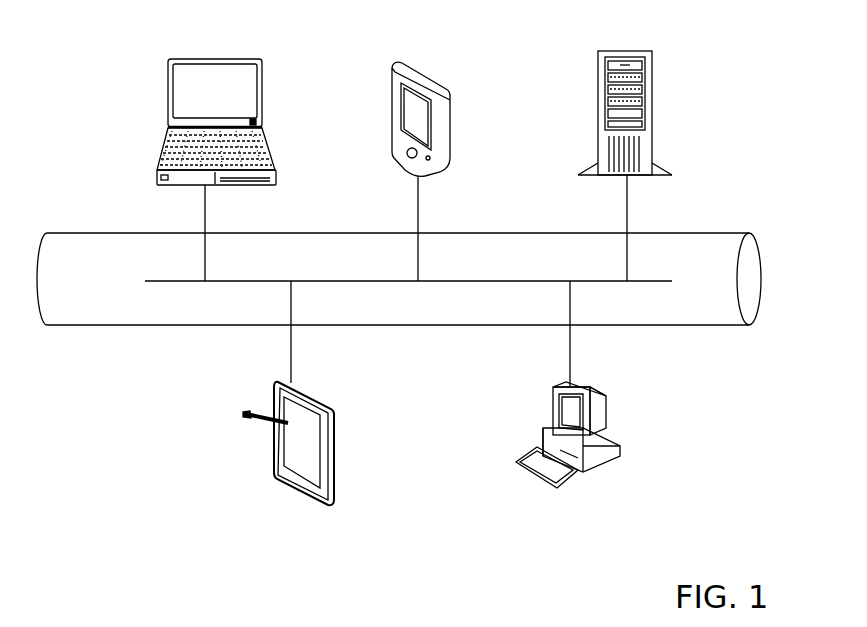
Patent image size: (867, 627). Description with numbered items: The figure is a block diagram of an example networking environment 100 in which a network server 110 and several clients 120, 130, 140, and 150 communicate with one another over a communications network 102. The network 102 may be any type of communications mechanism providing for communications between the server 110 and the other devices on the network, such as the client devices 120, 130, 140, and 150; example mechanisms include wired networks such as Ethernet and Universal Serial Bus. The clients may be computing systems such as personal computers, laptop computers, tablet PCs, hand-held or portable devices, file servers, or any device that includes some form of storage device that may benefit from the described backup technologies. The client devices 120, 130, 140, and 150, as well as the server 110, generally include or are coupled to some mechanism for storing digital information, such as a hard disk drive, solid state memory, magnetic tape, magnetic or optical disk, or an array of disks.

The networking environment 100 is at (126, 413).
The communications network 102 is at (253, 61).
The network server 110 is at (654, 62).
The client 120 is at (708, 233).
The client 130 is at (334, 412).
The client 140 is at (437, 76).
The client 150 is at (597, 392).